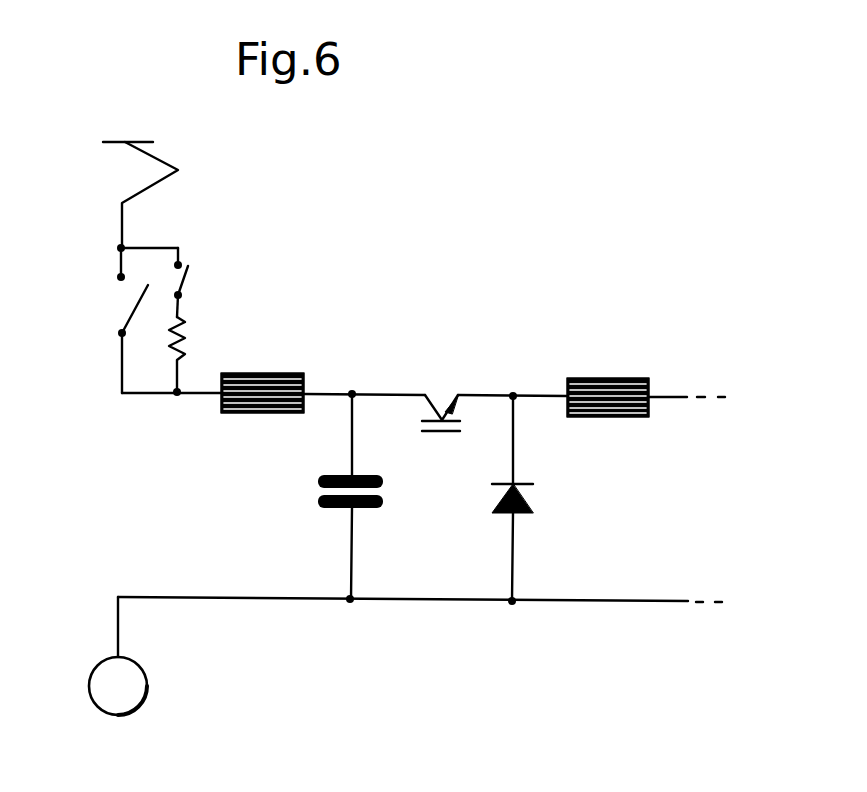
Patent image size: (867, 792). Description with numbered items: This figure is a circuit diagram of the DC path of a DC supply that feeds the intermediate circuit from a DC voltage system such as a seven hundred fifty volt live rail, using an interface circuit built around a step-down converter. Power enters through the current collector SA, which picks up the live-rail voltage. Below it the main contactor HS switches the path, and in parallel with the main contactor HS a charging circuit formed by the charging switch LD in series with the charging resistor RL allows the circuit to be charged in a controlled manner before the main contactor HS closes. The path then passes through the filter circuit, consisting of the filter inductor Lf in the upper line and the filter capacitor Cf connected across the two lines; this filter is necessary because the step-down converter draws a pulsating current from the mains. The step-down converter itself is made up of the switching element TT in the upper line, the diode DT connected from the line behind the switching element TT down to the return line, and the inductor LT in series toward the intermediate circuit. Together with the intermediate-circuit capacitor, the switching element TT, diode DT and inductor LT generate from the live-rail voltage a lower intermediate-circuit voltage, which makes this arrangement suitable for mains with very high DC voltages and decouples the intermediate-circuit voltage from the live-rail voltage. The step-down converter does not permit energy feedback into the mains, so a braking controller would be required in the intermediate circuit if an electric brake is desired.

The current collector SA is at (119, 195).
The main contactor HS is at (101, 320).
The charging switch LD is at (203, 278).
The charging resistor RL is at (201, 354).
The filter inductor Lf is at (262, 368).
The switching element TT is at (443, 377).
The inductor LT is at (646, 371).
The filter capacitor Cf is at (315, 497).
The diode DT is at (533, 498).